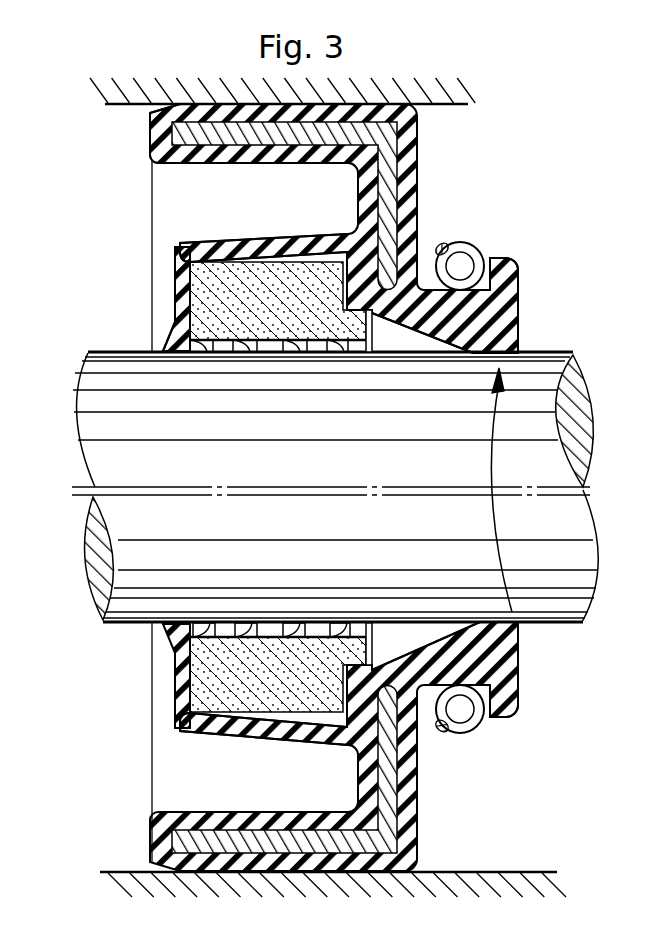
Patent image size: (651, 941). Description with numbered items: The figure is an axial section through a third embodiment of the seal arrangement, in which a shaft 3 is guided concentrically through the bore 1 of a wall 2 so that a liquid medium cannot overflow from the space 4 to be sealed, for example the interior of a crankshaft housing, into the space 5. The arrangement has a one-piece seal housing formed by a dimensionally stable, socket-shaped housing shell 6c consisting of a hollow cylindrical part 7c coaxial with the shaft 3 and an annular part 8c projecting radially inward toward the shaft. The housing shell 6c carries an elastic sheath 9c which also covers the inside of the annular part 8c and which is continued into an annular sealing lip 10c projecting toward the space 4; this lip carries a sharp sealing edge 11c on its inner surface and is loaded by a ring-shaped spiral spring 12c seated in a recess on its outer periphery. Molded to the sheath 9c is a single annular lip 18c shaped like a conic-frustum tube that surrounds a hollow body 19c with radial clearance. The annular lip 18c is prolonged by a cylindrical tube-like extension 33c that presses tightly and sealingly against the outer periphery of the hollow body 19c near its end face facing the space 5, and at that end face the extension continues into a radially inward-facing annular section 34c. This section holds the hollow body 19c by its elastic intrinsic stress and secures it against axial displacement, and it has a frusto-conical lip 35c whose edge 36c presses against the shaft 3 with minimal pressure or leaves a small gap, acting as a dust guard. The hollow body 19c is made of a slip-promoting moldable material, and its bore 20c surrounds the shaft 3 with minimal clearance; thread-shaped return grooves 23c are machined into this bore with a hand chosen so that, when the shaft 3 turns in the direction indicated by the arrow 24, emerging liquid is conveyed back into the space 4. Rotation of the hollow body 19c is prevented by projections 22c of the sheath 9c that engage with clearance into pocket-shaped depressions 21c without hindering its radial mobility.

The bore 1 is at (440, 104).
The wall 2 is at (466, 892).
The shaft 3 is at (335, 473).
The space to be sealed 4 is at (533, 801).
The space 5 is at (120, 801).
The arrow indicating direction of rotation 24 is at (492, 520).
The housing shell 6c is at (378, 140).
The hollow cylindrical part 7c is at (180, 133).
The annular part 8c is at (397, 759).
The sheath 9c is at (412, 196).
The annular sealing lip 10c is at (497, 298).
The sealing edge 11c is at (493, 630).
The spiral spring 12c is at (440, 247).
The annular lip 18c is at (283, 243).
The hollow body 19c is at (200, 327).
The bore 20c is at (232, 352).
The pocket-shaped depressions 21c is at (366, 325).
The projections 22c is at (367, 687).
The return grooves 23c is at (302, 352).
The cylindrical tube-like extension 33c is at (237, 740).
The annular section 34c is at (185, 291).
The frusto-conical-shaped lip 35c is at (178, 640).
The edge 36c is at (180, 350).